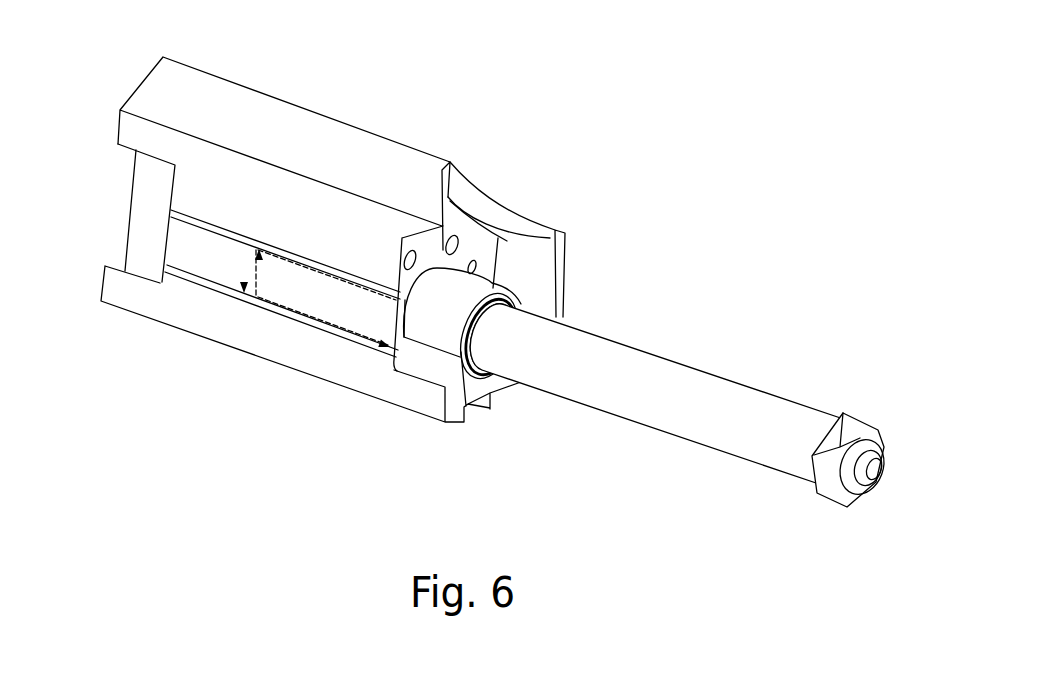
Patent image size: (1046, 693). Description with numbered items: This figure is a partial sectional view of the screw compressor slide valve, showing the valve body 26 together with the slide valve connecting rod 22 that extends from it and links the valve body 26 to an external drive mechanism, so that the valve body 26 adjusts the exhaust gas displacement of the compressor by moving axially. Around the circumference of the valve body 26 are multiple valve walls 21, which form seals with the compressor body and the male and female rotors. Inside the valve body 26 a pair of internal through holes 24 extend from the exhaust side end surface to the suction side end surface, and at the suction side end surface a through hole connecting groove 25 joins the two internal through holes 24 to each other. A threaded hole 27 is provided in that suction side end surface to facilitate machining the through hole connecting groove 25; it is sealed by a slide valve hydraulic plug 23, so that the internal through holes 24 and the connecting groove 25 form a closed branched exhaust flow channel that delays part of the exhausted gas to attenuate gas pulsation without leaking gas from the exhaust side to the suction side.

The valve wall 21 is at (173, 105).
The slide valve connecting rod 22 is at (646, 426).
The slide valve hydraulic plug 23 is at (140, 263).
The internal through hole 24 is at (340, 340).
The through hole connecting groove 25 is at (236, 285).
The valve body 26 is at (540, 280).
The threaded hole 27 is at (126, 149).